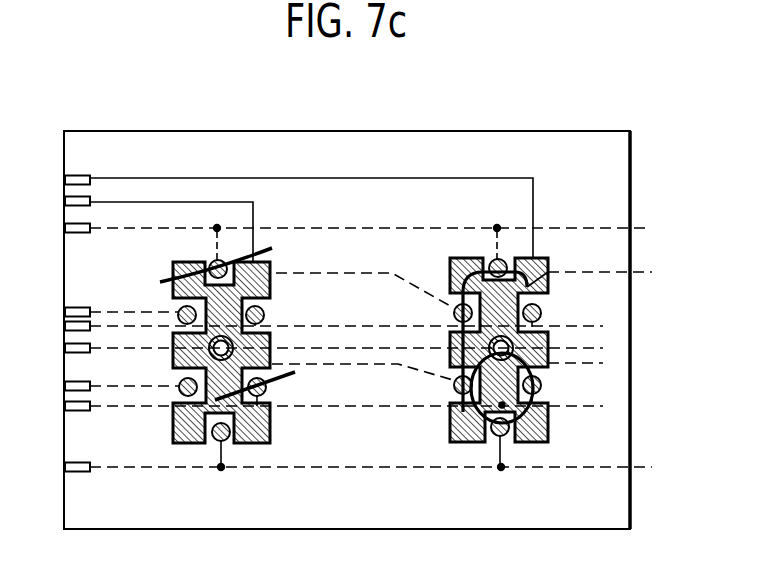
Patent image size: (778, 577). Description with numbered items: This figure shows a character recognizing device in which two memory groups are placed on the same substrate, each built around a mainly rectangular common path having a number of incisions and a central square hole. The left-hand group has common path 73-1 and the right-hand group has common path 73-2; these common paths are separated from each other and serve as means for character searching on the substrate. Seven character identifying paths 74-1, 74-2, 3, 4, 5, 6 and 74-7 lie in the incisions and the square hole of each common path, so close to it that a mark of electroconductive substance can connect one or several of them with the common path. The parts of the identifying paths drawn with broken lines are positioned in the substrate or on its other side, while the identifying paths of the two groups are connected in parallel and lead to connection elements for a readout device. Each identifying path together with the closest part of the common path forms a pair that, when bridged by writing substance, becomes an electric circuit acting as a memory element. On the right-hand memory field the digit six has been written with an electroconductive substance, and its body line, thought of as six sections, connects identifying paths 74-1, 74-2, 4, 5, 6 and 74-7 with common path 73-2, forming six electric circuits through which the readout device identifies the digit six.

The common path 73-1 is at (253, 203).
The common path 73-2 is at (520, 178).
The character identifying path 74-1 is at (398, 226).
The character identifying path 74-2 is at (493, 280).
The character identifying path 3 is at (402, 323).
The character identifying path 4 is at (402, 348).
The character identifying path 5 is at (493, 373).
The character identifying path 6 is at (402, 403).
The character identifying path 74-7 is at (403, 466).